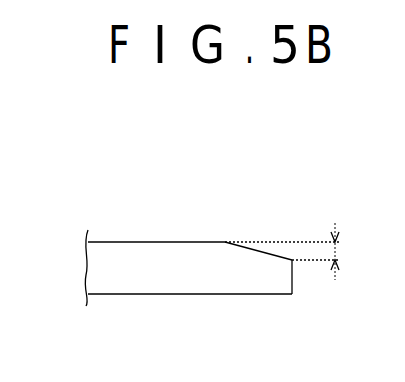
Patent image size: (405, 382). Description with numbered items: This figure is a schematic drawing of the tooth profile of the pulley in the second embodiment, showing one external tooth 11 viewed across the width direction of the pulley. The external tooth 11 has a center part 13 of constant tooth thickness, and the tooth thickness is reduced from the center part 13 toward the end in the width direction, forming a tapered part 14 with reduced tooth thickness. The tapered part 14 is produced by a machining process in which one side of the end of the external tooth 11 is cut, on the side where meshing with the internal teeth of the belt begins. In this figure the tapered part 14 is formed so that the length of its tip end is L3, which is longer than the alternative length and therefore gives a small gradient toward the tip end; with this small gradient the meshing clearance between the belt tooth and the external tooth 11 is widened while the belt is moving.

The external tooth 11 is at (208, 199).
The tapered part 14 is at (265, 256).
The center part 13 is at (109, 286).
The length of the tip ends L3 is at (338, 251).